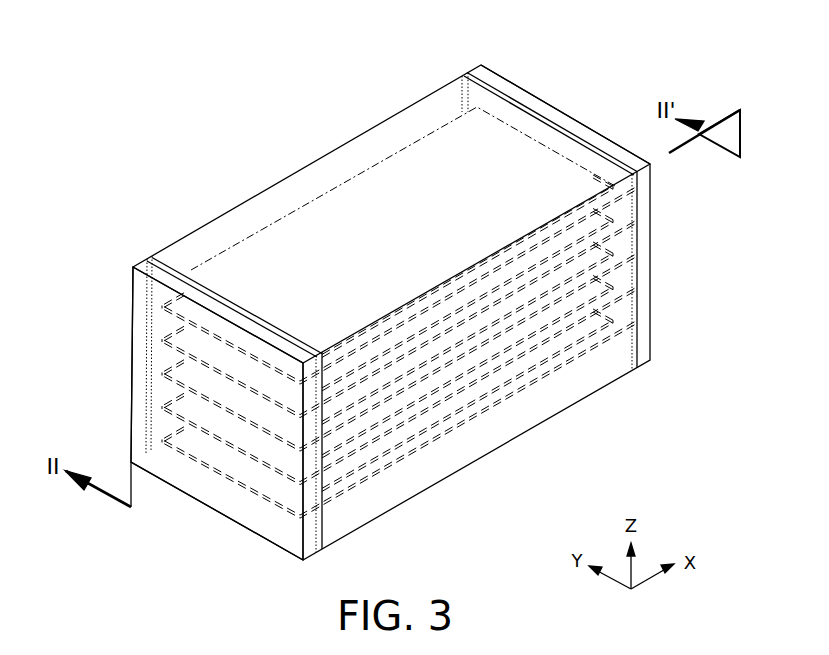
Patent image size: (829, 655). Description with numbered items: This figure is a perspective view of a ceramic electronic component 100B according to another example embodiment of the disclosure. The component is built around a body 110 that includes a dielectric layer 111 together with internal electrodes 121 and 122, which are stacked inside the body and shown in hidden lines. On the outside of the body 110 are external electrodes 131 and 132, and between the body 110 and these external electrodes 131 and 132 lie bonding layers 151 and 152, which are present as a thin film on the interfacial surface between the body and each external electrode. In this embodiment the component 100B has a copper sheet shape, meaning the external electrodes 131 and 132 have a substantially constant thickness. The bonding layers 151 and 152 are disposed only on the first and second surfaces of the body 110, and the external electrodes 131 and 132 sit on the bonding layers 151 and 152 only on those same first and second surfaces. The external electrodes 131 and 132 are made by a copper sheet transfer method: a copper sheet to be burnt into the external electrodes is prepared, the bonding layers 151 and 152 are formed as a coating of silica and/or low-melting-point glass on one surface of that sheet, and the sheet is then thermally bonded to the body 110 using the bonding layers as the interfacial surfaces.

The ceramic electronic component 100B is at (184, 36).
The body 110 is at (345, 143).
The dielectric layer 111 is at (290, 203).
The internal electrode 121 is at (278, 487).
The internal electrode 122 is at (598, 314).
The external electrode 131 is at (133, 374).
The external electrode 132 is at (563, 112).
The bonding layer 151 is at (169, 267).
The bonding layer 152 is at (479, 64).